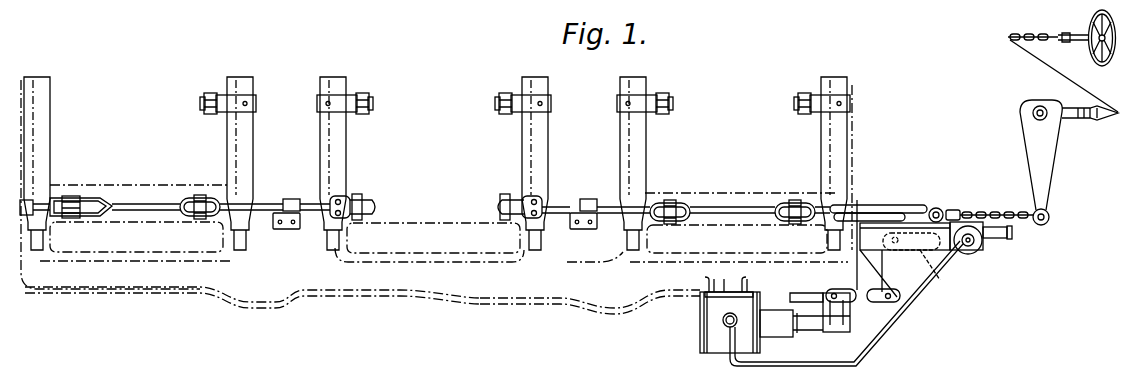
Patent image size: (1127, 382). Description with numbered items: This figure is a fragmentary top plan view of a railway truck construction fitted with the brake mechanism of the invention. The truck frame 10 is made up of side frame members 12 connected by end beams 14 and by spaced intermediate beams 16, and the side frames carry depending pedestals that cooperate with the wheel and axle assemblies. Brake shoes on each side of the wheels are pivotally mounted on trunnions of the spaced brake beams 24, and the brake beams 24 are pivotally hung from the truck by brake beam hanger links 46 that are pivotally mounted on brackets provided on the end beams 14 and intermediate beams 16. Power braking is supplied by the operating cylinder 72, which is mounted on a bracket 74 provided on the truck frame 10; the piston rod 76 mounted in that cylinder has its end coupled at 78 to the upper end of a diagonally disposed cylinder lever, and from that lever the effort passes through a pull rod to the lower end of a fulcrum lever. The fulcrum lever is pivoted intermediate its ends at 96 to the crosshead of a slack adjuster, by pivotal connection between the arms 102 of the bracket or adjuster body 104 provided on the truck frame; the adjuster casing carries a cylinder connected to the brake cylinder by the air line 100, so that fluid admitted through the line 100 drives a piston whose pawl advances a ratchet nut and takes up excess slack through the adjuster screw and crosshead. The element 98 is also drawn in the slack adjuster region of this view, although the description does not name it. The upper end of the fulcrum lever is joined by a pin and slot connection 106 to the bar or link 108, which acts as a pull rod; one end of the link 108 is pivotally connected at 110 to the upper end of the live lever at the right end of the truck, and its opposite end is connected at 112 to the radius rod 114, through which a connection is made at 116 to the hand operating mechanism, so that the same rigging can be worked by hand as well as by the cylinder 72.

The truck frame 10 is at (542, 287).
The side frame members 12 is at (413, 287).
The end beams 14 is at (851, 188).
The spaced intermediate beams 16 is at (632, 143).
The brake beams 24 is at (52, 141).
The brake beam hanger links 46 is at (503, 104).
The operating cylinder 72 is at (702, 330).
The bracket 74 is at (710, 285).
The piston rod 76 is at (812, 328).
The coupling 78 is at (835, 330).
The fulcrum lever pivot 96 is at (940, 270).
The valve 98 is at (983, 249).
The air line 100 is at (896, 328).
The arms of the adjuster body 102 is at (957, 255).
The adjuster body 104 is at (870, 257).
The pin and slot connection 106 is at (902, 212).
The bar or link 108 is at (930, 208).
The pivotal connection 110 is at (795, 206).
The connection 112 is at (993, 212).
The radius rod 114 is at (1050, 177).
The connection to hand operating mechanism 116 is at (1108, 110).